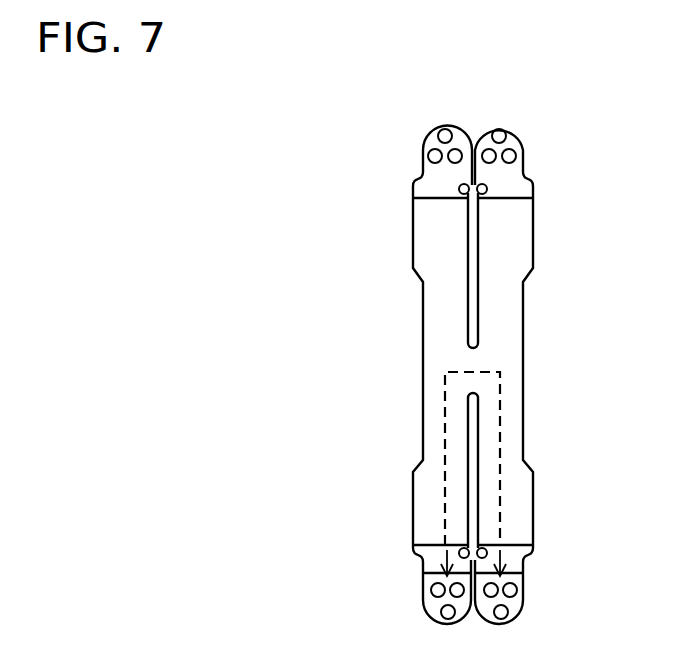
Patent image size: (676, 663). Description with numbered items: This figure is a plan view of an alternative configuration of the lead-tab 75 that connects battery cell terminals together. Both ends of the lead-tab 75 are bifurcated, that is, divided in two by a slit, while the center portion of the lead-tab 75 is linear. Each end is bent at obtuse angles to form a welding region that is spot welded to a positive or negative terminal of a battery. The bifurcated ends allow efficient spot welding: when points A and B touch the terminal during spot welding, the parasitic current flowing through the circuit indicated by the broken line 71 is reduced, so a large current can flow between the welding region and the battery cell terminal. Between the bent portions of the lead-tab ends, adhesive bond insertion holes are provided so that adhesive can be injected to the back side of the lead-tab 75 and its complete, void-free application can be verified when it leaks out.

The lead-tab 75 is at (472, 393).
The dashed region (mounting area) 71 is at (500, 440).
The point A is at (432, 585).
The point B is at (520, 582).